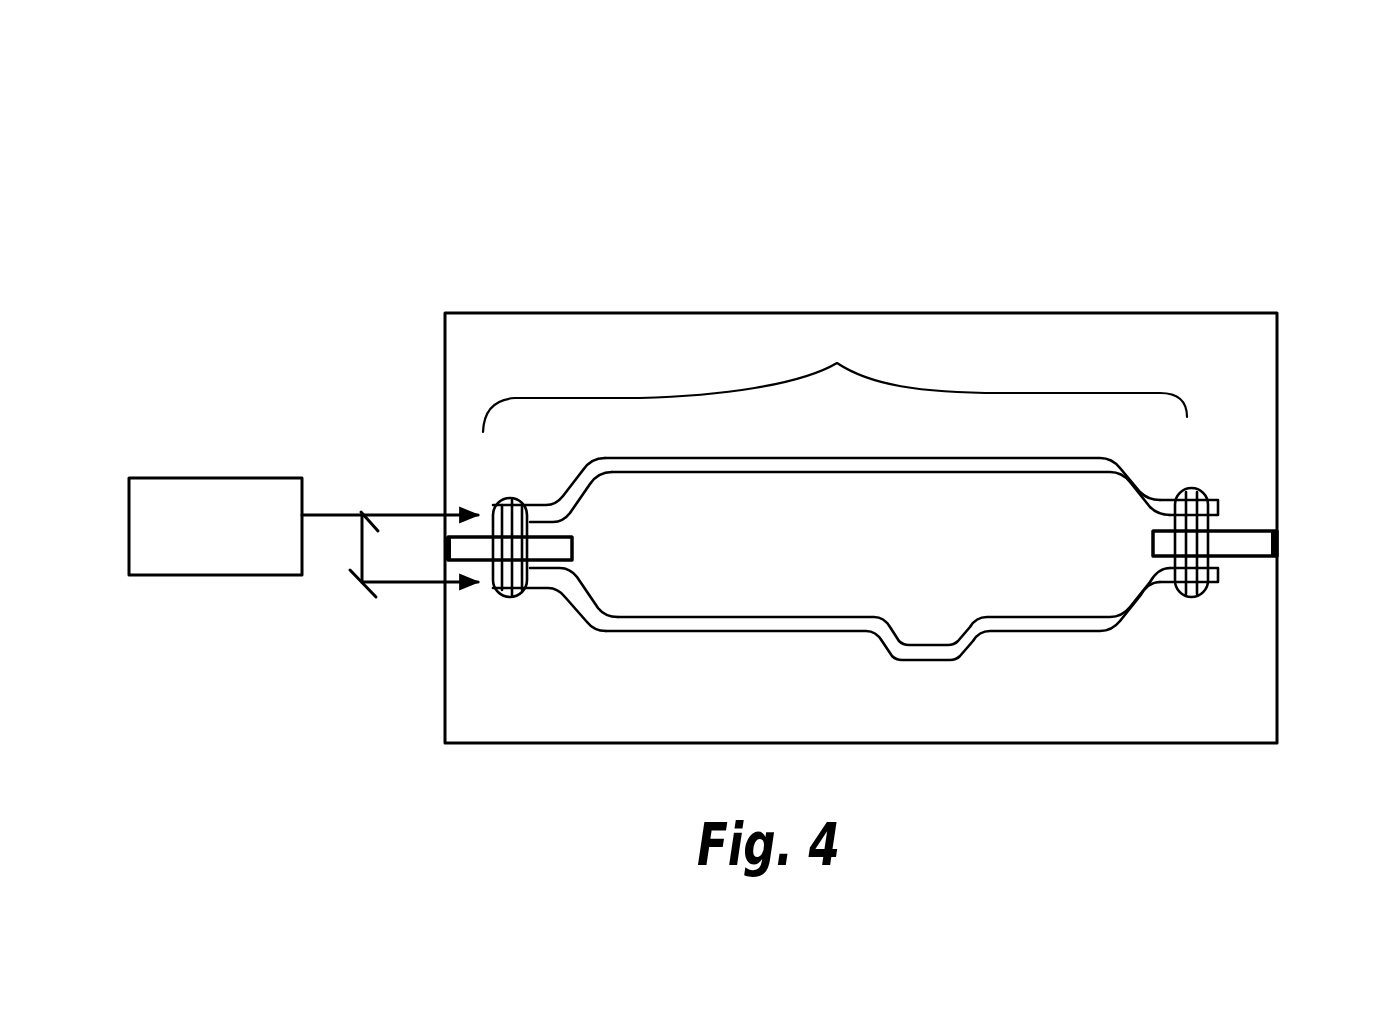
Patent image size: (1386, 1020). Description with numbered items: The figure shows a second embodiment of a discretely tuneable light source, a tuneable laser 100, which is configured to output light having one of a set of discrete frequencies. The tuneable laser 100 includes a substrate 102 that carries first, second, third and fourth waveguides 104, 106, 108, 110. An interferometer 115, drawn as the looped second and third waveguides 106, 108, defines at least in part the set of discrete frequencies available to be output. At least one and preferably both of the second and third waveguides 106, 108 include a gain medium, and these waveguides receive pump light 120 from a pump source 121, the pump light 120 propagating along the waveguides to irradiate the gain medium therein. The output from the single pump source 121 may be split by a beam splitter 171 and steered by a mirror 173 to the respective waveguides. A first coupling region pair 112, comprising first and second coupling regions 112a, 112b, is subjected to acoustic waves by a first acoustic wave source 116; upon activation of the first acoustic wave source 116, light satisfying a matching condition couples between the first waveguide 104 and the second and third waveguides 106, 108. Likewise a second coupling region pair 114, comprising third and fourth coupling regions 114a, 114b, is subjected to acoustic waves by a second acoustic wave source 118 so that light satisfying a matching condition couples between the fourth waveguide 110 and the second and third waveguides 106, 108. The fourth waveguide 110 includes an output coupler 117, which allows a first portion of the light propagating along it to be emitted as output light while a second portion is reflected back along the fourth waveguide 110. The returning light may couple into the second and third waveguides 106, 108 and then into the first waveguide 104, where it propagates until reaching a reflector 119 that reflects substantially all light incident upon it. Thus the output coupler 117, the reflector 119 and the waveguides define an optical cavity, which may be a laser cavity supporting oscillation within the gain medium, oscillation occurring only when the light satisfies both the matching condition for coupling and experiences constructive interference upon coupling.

The tuneable laser 100 is at (1216, 200).
The substrate 102 is at (1268, 331).
The first waveguide 104 is at (468, 558).
The second waveguide 106 is at (812, 460).
The third waveguide 108 is at (773, 617).
The fourth waveguide 110 is at (1258, 546).
The first coupling region pair 112 is at (584, 548).
The first coupling region 112a is at (575, 522).
The second coupling region 112b is at (575, 570).
The second coupling region pair 114 is at (1142, 547).
The third coupling region 114a is at (1218, 522).
The fourth coupling region 114b is at (1218, 560).
The interferometer 115 is at (835, 374).
The first acoustic wave source 116 is at (517, 600).
The output coupler 117 is at (1280, 541).
The second acoustic wave source 118 is at (1188, 488).
The reflector 119 is at (446, 550).
The pump light 120 is at (412, 585).
The pump source 121 is at (225, 478).
The beam splitter 171 is at (361, 511).
The mirror 173 is at (352, 573).